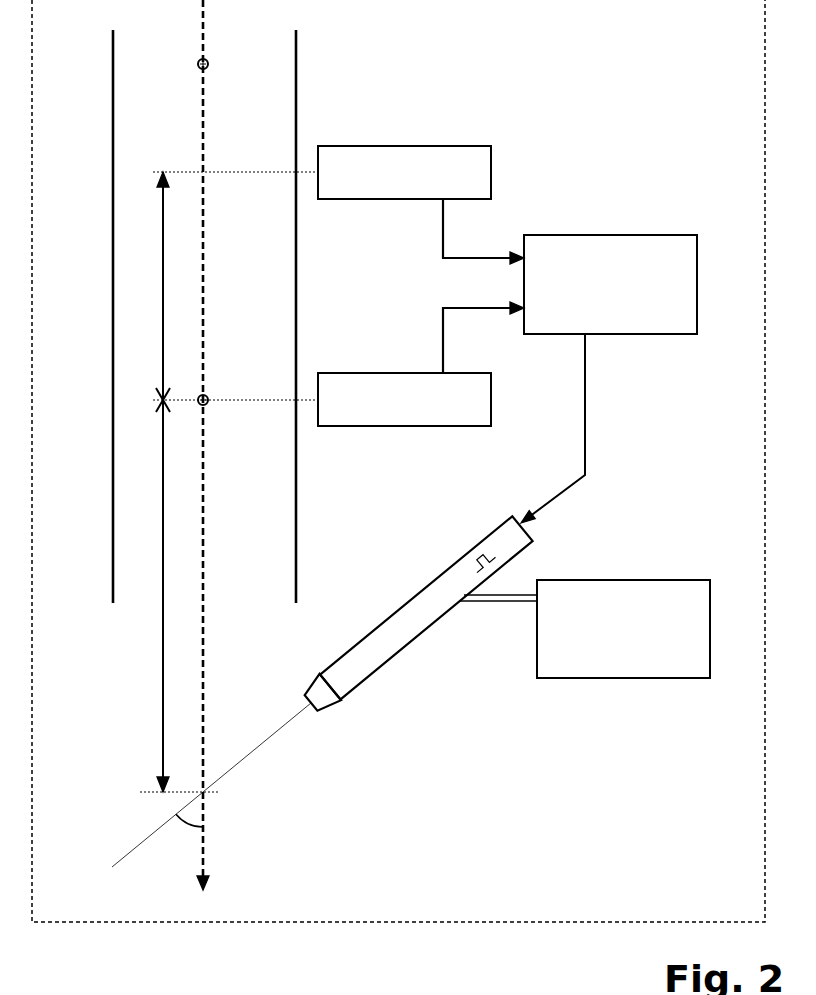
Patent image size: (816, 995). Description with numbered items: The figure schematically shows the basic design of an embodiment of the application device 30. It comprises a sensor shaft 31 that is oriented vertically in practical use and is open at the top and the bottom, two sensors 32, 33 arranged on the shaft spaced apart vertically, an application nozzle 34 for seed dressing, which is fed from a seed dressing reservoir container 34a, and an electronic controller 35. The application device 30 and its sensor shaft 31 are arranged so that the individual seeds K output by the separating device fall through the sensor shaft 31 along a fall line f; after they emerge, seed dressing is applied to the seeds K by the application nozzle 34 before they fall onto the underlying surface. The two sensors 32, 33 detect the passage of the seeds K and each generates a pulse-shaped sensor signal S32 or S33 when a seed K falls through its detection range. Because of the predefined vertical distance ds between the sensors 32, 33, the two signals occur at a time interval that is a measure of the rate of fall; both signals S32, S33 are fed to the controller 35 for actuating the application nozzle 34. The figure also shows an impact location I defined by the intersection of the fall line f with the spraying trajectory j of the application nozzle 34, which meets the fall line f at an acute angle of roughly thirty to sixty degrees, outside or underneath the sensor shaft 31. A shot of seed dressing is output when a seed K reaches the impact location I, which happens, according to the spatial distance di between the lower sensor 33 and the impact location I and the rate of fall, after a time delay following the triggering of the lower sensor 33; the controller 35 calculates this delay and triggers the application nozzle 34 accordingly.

The application device 30 is at (88, 932).
The sensor shaft 31 is at (298, 62).
The sensor 32 is at (441, 162).
The sensor 33 is at (442, 410).
The application nozzle 34 is at (368, 658).
The seed dressing reservoir container 34a is at (593, 672).
The electronic controller 35 is at (621, 314).
The seed K is at (199, 62).
The distance between the two sensors ds is at (162, 333).
The spatial distance between the sensor and the impact location di is at (162, 643).
The fall line f is at (205, 586).
The spraying trajectory j is at (262, 748).
The impact location I is at (206, 798).
The sensor signal S32 is at (163, 987).
The sensor signal S33 is at (317, 987).